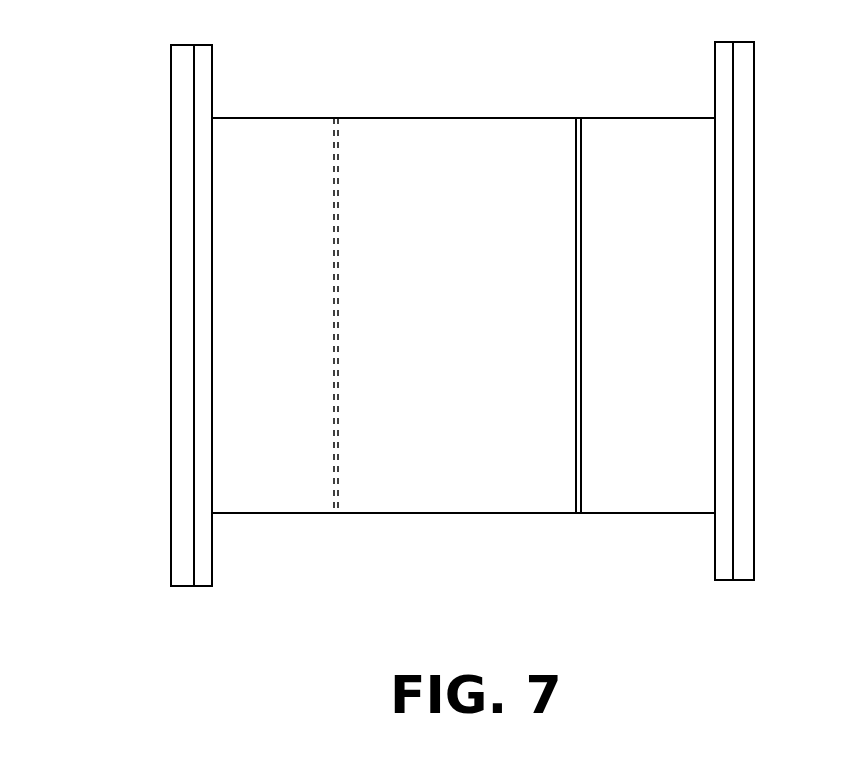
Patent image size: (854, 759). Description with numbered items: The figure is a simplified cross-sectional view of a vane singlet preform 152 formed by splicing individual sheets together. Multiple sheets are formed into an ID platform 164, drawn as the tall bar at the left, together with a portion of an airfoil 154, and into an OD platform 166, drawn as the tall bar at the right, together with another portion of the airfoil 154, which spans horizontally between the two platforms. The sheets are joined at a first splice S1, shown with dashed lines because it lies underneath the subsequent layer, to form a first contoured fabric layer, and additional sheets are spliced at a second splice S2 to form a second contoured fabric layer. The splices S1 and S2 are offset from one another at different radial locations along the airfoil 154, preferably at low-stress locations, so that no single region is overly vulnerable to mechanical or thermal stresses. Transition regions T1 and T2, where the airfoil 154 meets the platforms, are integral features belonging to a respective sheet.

The vane singlet preform 152 is at (90, 106).
The airfoil 154 is at (459, 117).
The ID platform 164 is at (171, 378).
The OD platform 166 is at (755, 388).
The first splice S1 is at (334, 409).
The second splice S2 is at (576, 356).
The transition region T1 is at (714, 114).
The transition region T2 is at (212, 515).